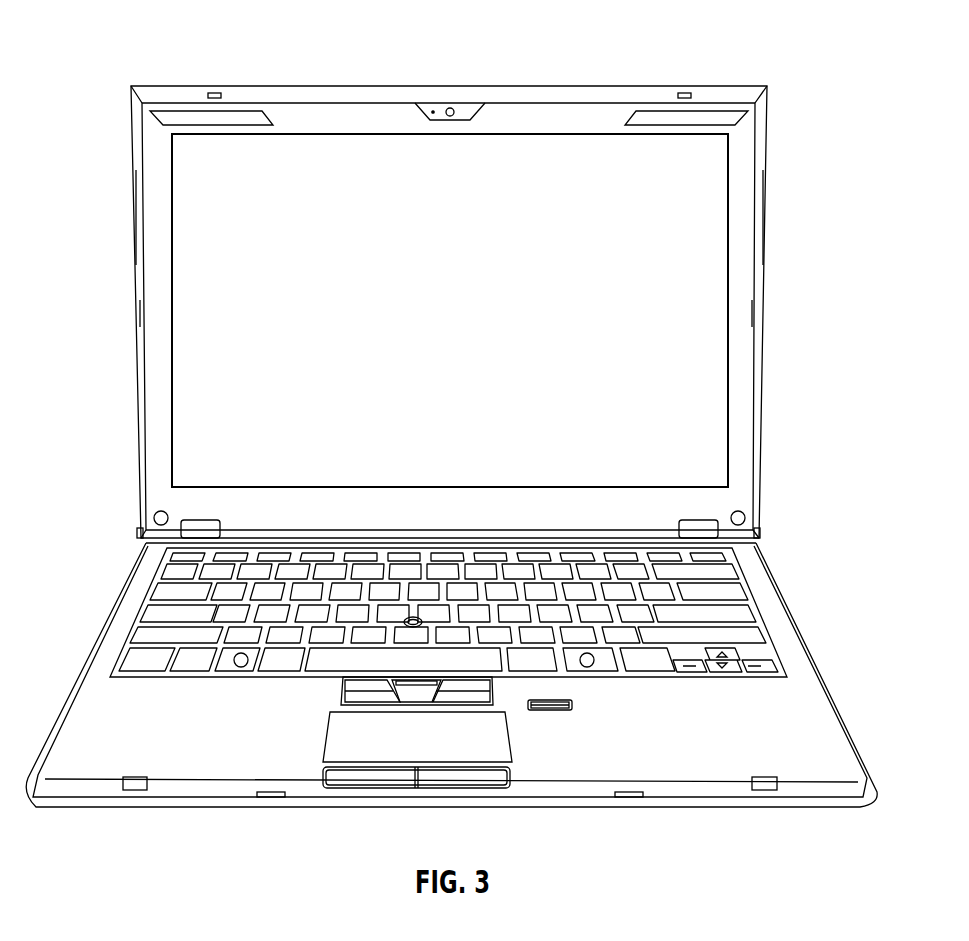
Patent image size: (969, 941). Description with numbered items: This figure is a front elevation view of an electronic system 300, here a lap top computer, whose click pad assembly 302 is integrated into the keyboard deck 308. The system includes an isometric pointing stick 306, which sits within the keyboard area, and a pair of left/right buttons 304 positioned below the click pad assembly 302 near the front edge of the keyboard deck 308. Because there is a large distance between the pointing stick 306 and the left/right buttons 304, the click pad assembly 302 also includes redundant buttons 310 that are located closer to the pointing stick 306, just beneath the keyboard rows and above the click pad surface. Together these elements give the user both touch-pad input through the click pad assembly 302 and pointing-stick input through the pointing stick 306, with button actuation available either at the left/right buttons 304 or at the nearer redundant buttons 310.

The electronic system 300 is at (110, 50).
The click pad assembly 302 is at (313, 679).
The left/right buttons 304 is at (485, 777).
The isometric pointing stick 306 is at (413, 622).
The keyboard deck 308 is at (712, 753).
The redundant buttons 310 is at (470, 685).